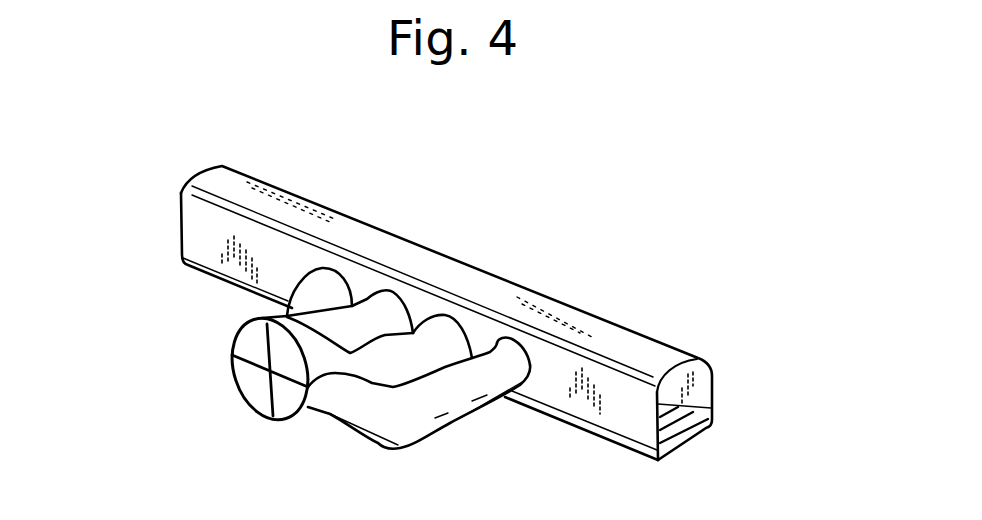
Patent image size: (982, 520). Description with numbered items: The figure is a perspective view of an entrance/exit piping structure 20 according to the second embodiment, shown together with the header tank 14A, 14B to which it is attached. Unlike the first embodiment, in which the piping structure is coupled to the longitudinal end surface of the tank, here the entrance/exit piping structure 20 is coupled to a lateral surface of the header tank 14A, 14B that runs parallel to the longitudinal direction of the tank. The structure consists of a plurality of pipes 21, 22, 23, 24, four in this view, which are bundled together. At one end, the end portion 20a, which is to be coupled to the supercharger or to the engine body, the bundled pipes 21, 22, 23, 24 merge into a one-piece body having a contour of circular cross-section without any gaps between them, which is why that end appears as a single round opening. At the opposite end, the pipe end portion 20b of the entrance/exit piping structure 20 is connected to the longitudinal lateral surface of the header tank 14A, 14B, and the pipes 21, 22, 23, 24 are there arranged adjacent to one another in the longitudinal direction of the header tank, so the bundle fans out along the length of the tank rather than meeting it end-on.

The header tank 14A is at (448, 313).
The header tank 14B is at (582, 325).
The entrance/exit piping structure 20 is at (329, 317).
The end portion 20a is at (253, 407).
The pipe end portion 20b is at (372, 313).
The pipe 21 is at (436, 403).
The pipe 22 is at (380, 367).
The pipe 23 is at (404, 303).
The pipe 24 is at (312, 290).